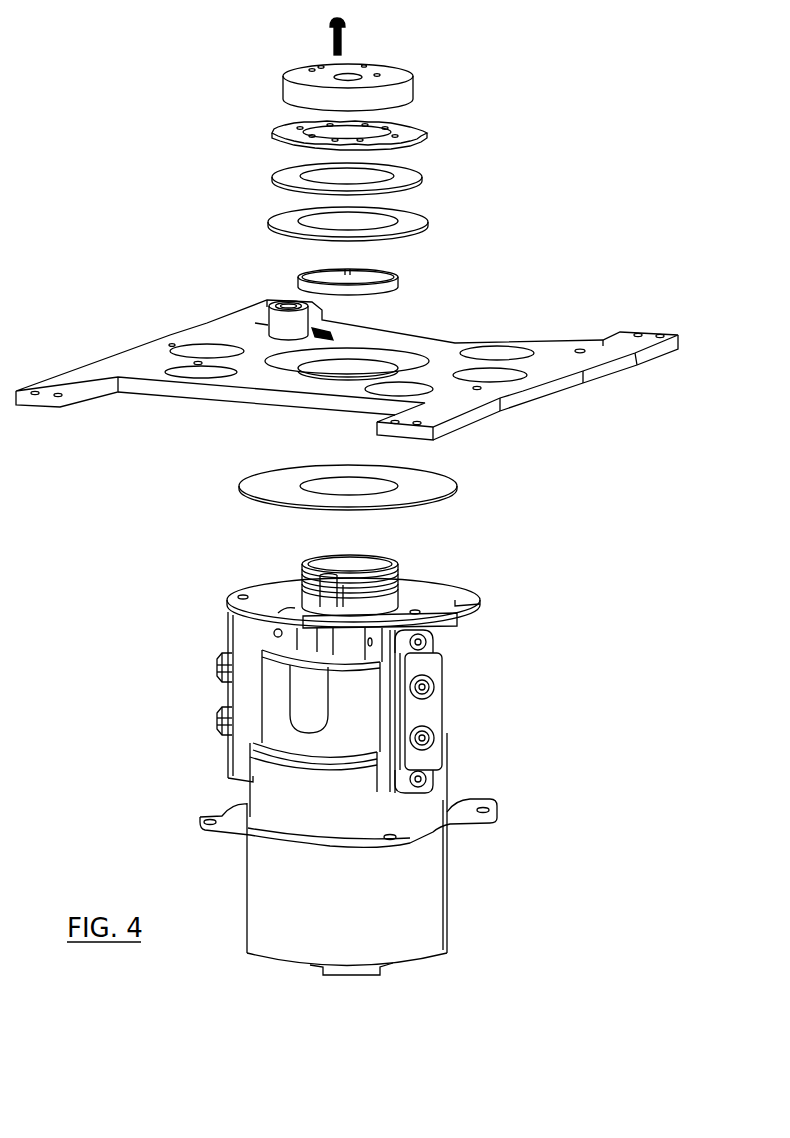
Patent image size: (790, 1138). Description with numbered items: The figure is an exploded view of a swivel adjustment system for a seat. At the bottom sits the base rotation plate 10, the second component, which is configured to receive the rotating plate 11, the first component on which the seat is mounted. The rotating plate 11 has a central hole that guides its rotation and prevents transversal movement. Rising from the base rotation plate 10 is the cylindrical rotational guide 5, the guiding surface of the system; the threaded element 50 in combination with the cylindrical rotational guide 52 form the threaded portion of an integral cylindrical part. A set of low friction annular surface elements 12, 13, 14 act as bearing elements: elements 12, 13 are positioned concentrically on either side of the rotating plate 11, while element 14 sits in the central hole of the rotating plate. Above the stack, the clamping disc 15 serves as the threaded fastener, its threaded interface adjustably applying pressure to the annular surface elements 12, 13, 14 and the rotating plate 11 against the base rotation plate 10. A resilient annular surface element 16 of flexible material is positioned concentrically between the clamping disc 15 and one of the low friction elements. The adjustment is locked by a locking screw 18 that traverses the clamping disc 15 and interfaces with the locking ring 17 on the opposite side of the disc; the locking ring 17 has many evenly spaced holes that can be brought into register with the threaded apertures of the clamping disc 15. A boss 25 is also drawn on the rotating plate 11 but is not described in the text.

The locking screw 18 is at (328, 35).
The clamping disc 15 is at (403, 93).
The locking ring 17 is at (430, 135).
The annular surface element 16 is at (407, 175).
The low friction annular surface element 13 is at (282, 222).
The low friction annular surface element 14 is at (310, 275).
The spacer boss 25 is at (280, 323).
The rotating plate 11 is at (547, 363).
The low friction annular surface element 12 is at (265, 485).
The threaded element 50 is at (400, 573).
The cylindrical rotational guide 52 is at (303, 593).
The cylindrical rotational guide 5 is at (390, 593).
The base rotation plate 10 is at (448, 597).